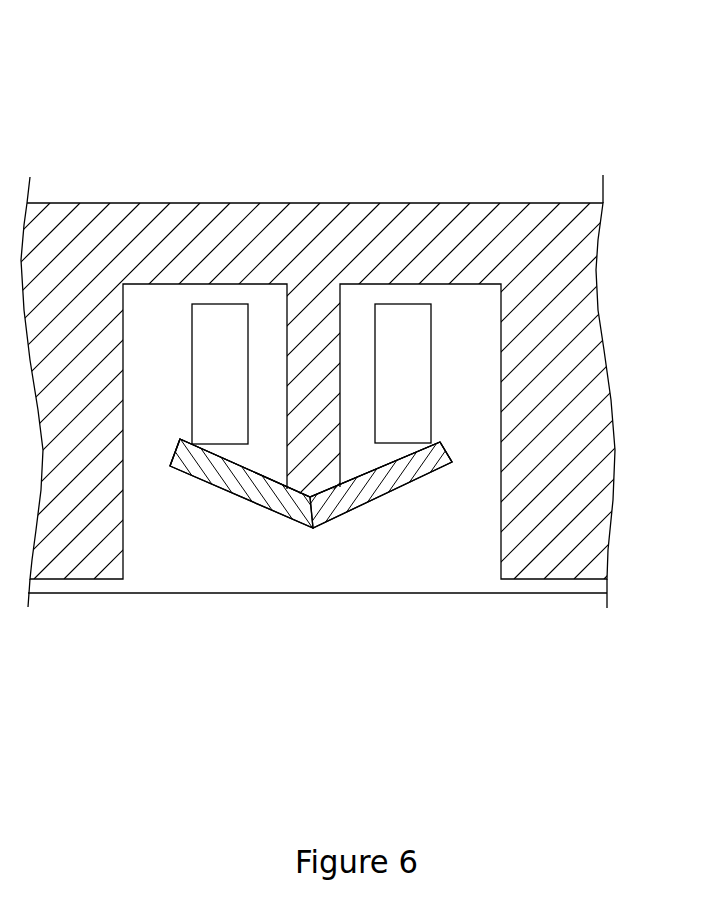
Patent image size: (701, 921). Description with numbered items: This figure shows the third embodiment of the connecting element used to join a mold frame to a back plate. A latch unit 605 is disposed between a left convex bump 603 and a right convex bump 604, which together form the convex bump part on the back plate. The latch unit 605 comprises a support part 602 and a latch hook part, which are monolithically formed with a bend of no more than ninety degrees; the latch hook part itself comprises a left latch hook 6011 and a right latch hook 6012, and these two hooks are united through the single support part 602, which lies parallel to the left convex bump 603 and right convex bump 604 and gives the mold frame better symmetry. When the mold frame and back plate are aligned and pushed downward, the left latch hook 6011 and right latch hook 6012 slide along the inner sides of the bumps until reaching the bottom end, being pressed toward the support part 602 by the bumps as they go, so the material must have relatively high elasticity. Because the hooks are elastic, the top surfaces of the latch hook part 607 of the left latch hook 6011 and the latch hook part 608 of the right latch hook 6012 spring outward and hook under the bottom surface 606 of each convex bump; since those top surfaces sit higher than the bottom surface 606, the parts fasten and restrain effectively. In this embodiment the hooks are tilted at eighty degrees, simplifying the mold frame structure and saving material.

The support part 602 is at (340, 308).
The left convex bump 603 is at (218, 302).
The right convex bump 604 is at (413, 303).
The latch unit 605 is at (365, 618).
The left latch hook 6011 is at (230, 515).
The right latch hook 6012 is at (437, 488).
The bottom surface of convex bump 606 is at (235, 446).
The latch hook part of left latch hook 607 is at (203, 447).
The latch hook part of right latch hook 608 is at (405, 455).